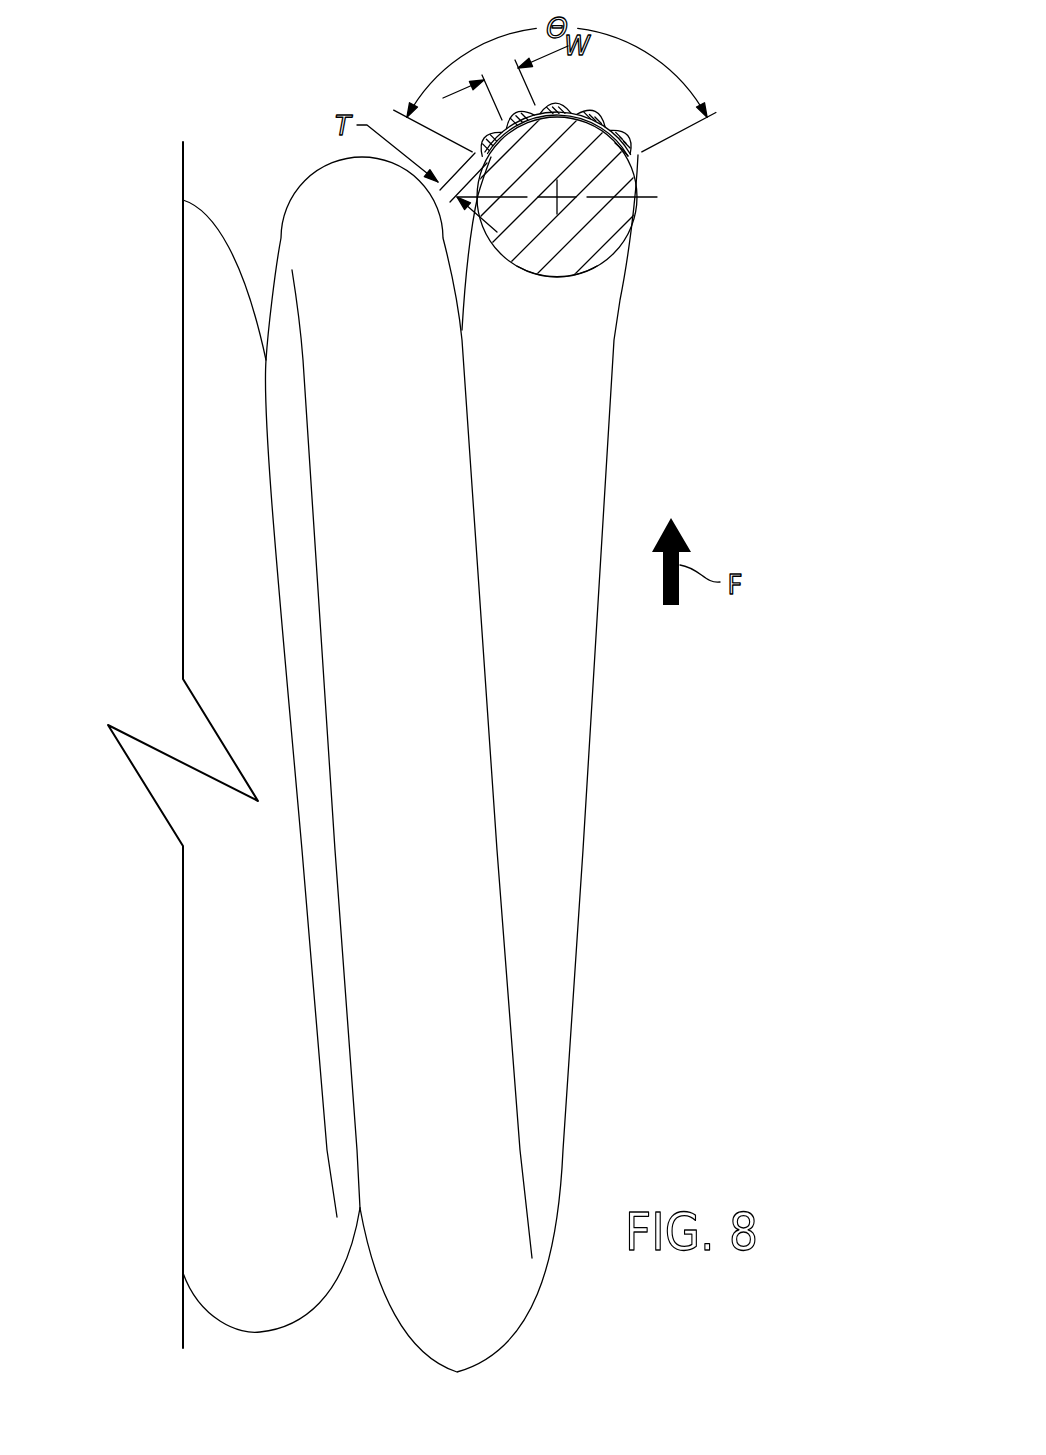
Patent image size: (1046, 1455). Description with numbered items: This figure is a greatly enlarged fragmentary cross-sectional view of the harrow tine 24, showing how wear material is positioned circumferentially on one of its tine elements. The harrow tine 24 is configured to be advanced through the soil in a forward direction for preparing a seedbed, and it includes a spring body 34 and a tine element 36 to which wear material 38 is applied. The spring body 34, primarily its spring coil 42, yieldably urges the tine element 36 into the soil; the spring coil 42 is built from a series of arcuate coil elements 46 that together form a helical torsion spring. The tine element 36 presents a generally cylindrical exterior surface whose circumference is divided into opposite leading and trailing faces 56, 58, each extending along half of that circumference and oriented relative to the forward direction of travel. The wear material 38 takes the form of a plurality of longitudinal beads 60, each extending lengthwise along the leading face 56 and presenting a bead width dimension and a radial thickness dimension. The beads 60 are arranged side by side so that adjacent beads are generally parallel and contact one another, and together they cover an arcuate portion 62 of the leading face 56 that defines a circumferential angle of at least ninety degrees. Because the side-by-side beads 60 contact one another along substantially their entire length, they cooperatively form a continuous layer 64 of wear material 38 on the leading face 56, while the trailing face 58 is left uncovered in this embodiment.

The harrow tine 24 is at (126, 124).
The spring body 34 is at (558, 1017).
The tine element 36 is at (627, 211).
The wear material 38 is at (637, 161).
The spring coil 42 is at (206, 511).
The coil element 46 is at (293, 213).
The leading face 56 is at (557, 90).
The trailing face 58 is at (567, 278).
The longitudinal bead 60 is at (490, 131).
The arcuate portion 62 is at (699, 43).
The continuous layer 64 is at (637, 152).